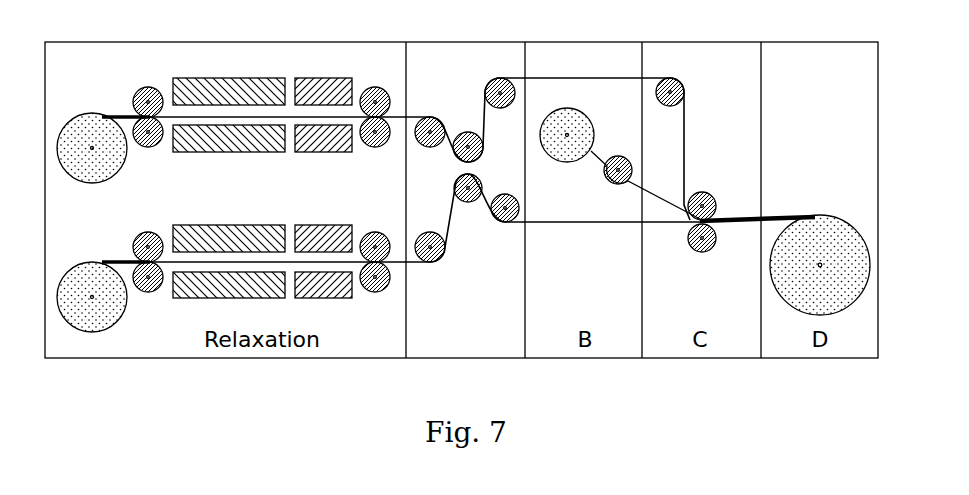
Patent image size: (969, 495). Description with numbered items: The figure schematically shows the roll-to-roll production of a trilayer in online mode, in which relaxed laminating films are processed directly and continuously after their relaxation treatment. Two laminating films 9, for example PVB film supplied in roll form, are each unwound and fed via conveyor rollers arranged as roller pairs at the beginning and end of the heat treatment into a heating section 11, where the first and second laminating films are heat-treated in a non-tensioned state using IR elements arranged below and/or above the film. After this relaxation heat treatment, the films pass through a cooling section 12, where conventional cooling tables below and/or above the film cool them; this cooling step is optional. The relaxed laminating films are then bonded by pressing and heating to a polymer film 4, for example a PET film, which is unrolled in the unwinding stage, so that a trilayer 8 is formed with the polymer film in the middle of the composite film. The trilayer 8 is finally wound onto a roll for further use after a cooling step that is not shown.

The laminating film 9 is at (92, 200).
The heating section 11 is at (229, 188).
The cooling section 12 is at (323, 188).
The polymer film 4 is at (620, 163).
The trilayer 8 is at (820, 240).